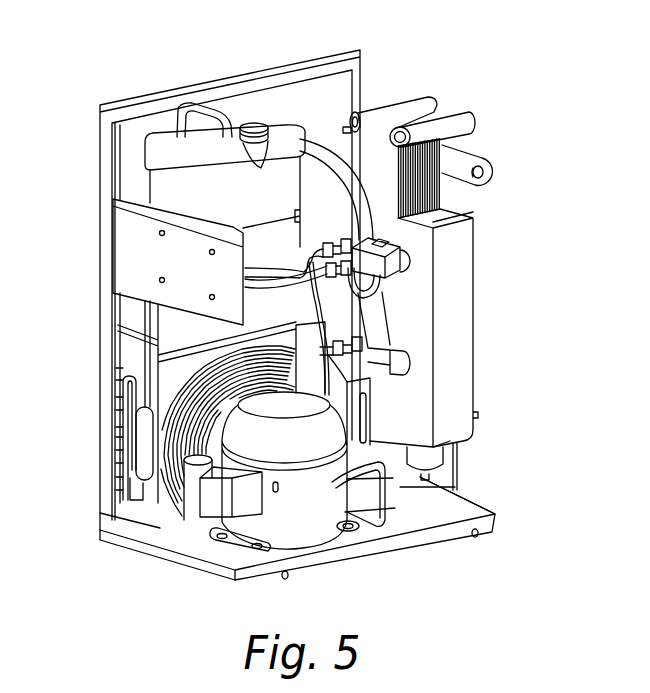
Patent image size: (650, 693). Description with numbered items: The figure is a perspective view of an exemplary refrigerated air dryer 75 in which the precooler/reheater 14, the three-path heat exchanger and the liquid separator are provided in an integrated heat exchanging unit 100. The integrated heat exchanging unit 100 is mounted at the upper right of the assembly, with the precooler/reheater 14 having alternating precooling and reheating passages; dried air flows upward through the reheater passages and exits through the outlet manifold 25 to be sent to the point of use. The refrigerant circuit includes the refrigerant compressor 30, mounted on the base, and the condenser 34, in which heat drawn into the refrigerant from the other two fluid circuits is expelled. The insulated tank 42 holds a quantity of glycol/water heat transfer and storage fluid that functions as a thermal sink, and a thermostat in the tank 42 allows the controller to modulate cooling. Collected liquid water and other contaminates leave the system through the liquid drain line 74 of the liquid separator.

The precooler/reheater 14 is at (423, 177).
The outlet manifold 25 is at (446, 126).
The refrigerant compressor 30 is at (345, 530).
The condenser 34 is at (128, 450).
The insulated tank 42 is at (172, 188).
The liquid drain line 74 is at (460, 488).
The refrigerated air dryer 75 is at (540, 142).
The integrated heat exchanging unit 100 is at (462, 315).